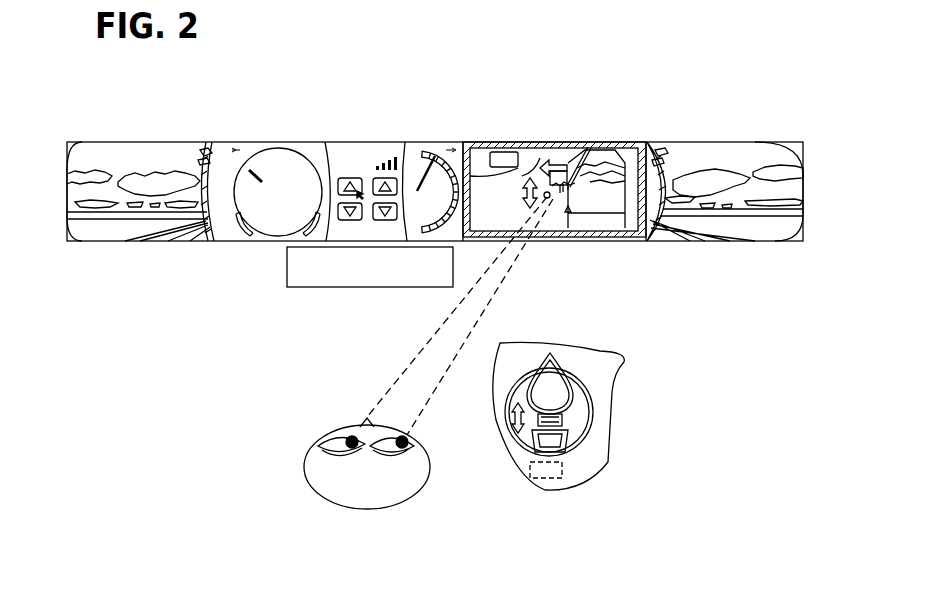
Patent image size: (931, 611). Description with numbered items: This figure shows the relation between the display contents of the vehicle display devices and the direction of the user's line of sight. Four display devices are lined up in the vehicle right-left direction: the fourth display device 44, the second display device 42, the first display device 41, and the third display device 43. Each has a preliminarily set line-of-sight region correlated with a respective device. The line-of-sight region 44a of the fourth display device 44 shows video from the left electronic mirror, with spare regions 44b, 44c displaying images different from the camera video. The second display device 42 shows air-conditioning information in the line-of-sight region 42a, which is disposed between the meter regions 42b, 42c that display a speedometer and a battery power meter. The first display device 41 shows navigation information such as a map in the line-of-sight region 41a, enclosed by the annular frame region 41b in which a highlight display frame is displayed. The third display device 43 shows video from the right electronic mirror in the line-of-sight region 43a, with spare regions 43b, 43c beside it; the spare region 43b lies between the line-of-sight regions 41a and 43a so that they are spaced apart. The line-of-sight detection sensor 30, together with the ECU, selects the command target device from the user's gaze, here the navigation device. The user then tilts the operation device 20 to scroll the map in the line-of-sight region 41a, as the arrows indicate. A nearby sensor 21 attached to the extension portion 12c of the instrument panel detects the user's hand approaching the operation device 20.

The fourth display device 44 is at (147, 152).
The line-of-sight region 44a is at (121, 172).
The spare region 44b is at (212, 173).
The spare region 44c is at (72, 154).
The second display device 42 is at (345, 152).
The line-of-sight region 42a is at (368, 156).
The meter region 42b is at (279, 178).
The meter region 42c is at (430, 173).
The first display device 41 is at (554, 150).
The line-of-sight region 41a is at (480, 105).
The frame region 41b is at (488, 146).
The third display device 43 is at (725, 152).
The line-of-sight region 43a is at (713, 182).
The spare region 43b is at (656, 174).
The spare region 43c is at (775, 173).
The line-of-sight detection sensor 30 is at (287, 267).
The operation device 20 is at (551, 352).
The nearby sensor 21 is at (528, 472).
The extension portion 12c is at (612, 382).